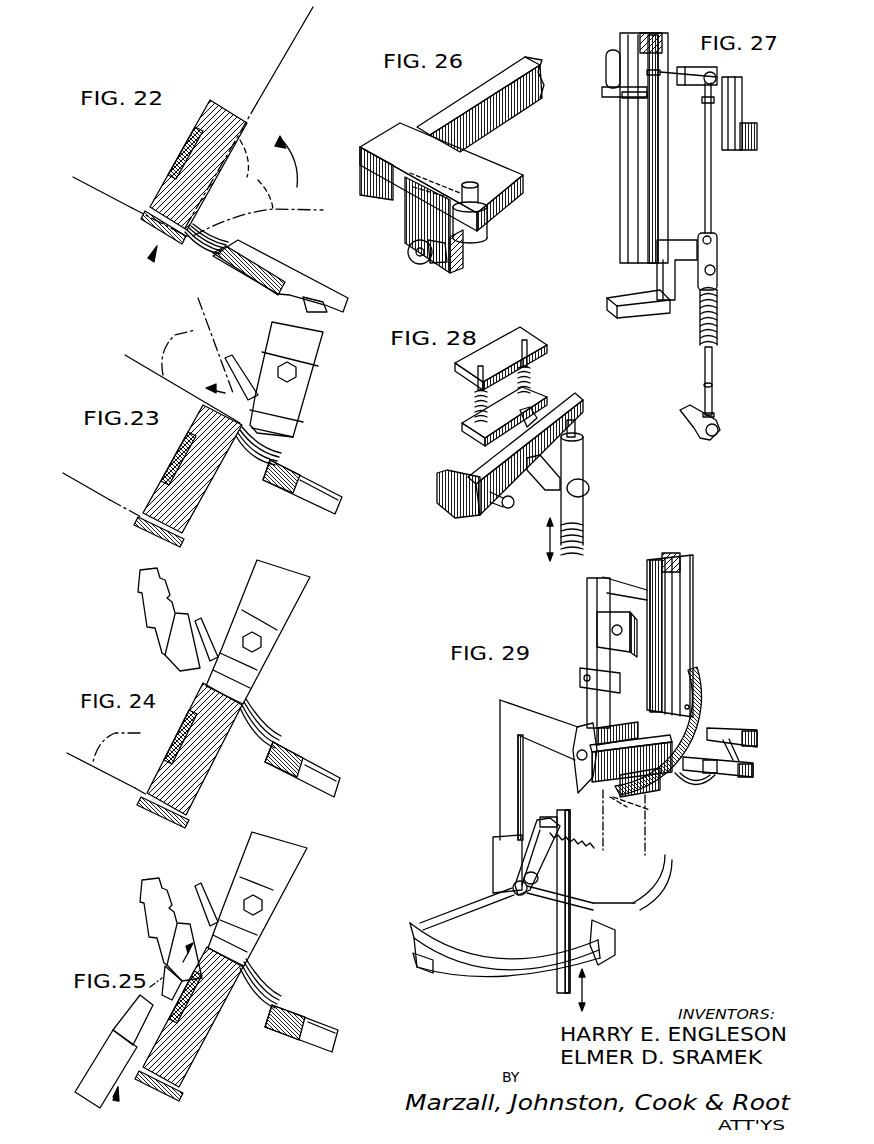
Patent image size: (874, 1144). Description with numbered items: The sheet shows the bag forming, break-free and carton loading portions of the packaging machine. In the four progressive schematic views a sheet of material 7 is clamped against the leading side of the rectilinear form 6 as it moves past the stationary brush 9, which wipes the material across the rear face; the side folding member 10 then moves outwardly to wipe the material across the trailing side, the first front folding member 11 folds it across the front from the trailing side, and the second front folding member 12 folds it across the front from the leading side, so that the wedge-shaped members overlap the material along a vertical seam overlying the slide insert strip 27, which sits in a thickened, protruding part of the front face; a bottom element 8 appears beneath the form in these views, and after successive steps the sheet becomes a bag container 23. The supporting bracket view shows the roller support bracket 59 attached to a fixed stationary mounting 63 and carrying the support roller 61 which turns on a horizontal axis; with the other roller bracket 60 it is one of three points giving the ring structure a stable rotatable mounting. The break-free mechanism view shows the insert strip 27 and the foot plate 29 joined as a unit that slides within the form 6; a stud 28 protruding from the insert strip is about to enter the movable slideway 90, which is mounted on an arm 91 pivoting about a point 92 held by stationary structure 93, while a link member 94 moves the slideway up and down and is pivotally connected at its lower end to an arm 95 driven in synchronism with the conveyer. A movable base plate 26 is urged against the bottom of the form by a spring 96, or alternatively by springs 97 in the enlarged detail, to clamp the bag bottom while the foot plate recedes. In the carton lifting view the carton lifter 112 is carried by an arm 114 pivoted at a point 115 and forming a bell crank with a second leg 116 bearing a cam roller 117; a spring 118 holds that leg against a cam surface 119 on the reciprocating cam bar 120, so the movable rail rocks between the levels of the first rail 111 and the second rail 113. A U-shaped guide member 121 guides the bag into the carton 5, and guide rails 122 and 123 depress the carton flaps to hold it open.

In FIG. 29, the cardboard carton 5 is at (640, 827).
In FIG. 22, the rectilinear form 6 is at (160, 180).
In FIG. 23, the rectilinear form 6 is at (150, 491).
In FIG. 24, the rectilinear form 6 is at (152, 771).
In FIG. 25, the rectilinear form 6 is at (200, 1050).
In FIG. 27, the rectilinear form 6 is at (622, 182).
In FIG. 29, the rectilinear form 6 is at (693, 598).
In FIG. 22, the sheet of material 7 is at (113, 207).
In FIG. 23, the sheet of material 7 is at (100, 522).
In FIG. 24, the sheet of material 7 is at (107, 761).
In FIG. 25, the sheet of material 7 is at (148, 990).
In FIG. 22, the shoe pad 8 is at (148, 233).
In FIG. 23, the shoe pad 8 is at (152, 532).
In FIG. 24, the shoe pad 8 is at (157, 823).
In FIG. 25, the shoe pad 8 is at (163, 1087).
In FIG. 22, the stationary brush 9 is at (207, 253).
In FIG. 23, the stationary brush 9 is at (253, 457).
In FIG. 24, the stationary brush 9 is at (253, 742).
In FIG. 25, the stationary brush 9 is at (257, 1005).
In FIG. 23, the side folding member 10 is at (283, 423).
In FIG. 24, the side folding member 10 is at (247, 683).
In FIG. 25, the side folding member 10 is at (247, 950).
In FIG. 24, the first front folding member 11 is at (175, 678).
In FIG. 25, the first front folding member 11 is at (157, 952).
In FIG. 25, the second front folding member 12 is at (118, 1033).
In FIG. 27, the bag container 23 is at (622, 105).
In FIG. 28, the movable base plate 26 is at (535, 336).
In FIG. 22, the insert strip 27 is at (170, 153).
In FIG. 23, the insert strip 27 is at (170, 455).
In FIG. 24, the insert strip 27 is at (160, 748).
In FIG. 25, the insert strip 27 is at (183, 1000).
In FIG. 27, the insert strip 27 is at (650, 155).
In FIG. 29, the insert strip 27 is at (683, 647).
In FIG. 27, the stud 28 is at (647, 72).
In FIG. 27, the foot plate 29 is at (625, 267).
In FIG. 29, the foot plate 29 is at (710, 697).
In FIG. 26, the roller support bracket 59 is at (478, 162).
In FIG. 26, the roller bracket 60 is at (488, 232).
In FIG. 26, the support roller 61 is at (413, 263).
In FIG. 26, the fixed stationary mounting 63 is at (507, 103).
In FIG. 27, the movable slideway 90 is at (685, 85).
In FIG. 27, the arm 91 is at (717, 75).
In FIG. 27, the pivot point 92 is at (742, 83).
In FIG. 27, the stationary structure 93 is at (742, 113).
In FIG. 27, the link member 94 is at (713, 180).
In FIG. 28, the link member 94 is at (585, 534).
In FIG. 27, the arm 95 is at (687, 423).
In FIG. 27, the spring 96 is at (718, 313).
In FIG. 28, the springs 97 is at (473, 402).
In FIG. 29, the first rail 111 is at (498, 977).
In FIG. 29, the carton lifter 112 is at (613, 940).
In FIG. 29, the second rail 113 is at (663, 887).
In FIG. 29, the arm 114 is at (563, 898).
In FIG. 29, the pivot point 115 is at (513, 886).
In FIG. 29, the second leg 116 is at (540, 827).
In FIG. 29, the cam roller 117 is at (548, 822).
In FIG. 29, the spring 118 is at (588, 836).
In FIG. 29, the cam surface 119 is at (547, 815).
In FIG. 29, the reciprocating cam bar 120 is at (560, 928).
In FIG. 29, the U-shaped guide member 121 is at (577, 717).
In FIG. 29, the guide rail 122 is at (660, 782).
In FIG. 29, the guide rail 123 is at (700, 788).